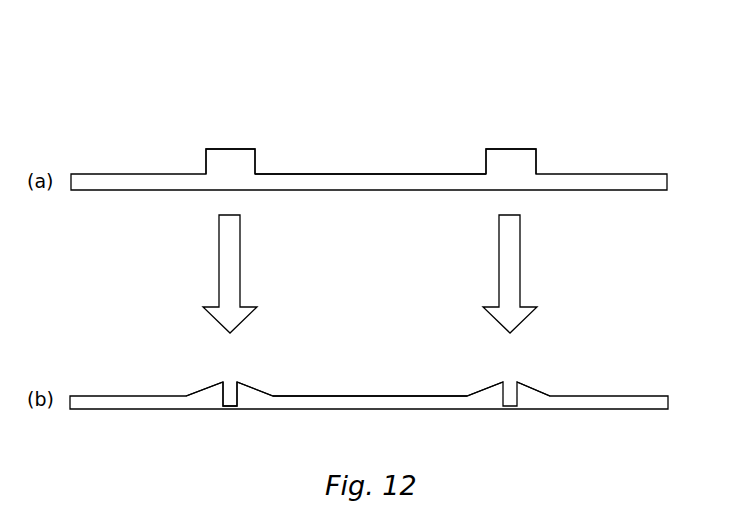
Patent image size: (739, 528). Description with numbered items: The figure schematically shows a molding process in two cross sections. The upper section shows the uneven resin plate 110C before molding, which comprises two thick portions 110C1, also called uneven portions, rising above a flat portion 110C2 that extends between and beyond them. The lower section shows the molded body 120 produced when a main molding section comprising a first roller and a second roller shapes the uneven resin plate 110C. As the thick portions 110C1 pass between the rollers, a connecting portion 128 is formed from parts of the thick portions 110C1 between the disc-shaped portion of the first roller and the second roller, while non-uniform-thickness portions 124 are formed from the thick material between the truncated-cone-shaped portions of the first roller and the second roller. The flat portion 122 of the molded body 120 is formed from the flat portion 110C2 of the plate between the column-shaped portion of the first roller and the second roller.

The uneven resin plate 110C is at (592, 97).
The thick portions 110C1 is at (252, 161).
The flat portion 110C2 is at (378, 183).
The molded body 120 is at (592, 380).
The flat portion 122 is at (373, 404).
The non-uniform-thickness portions 124 is at (210, 393).
The connecting portion 128 is at (228, 410).